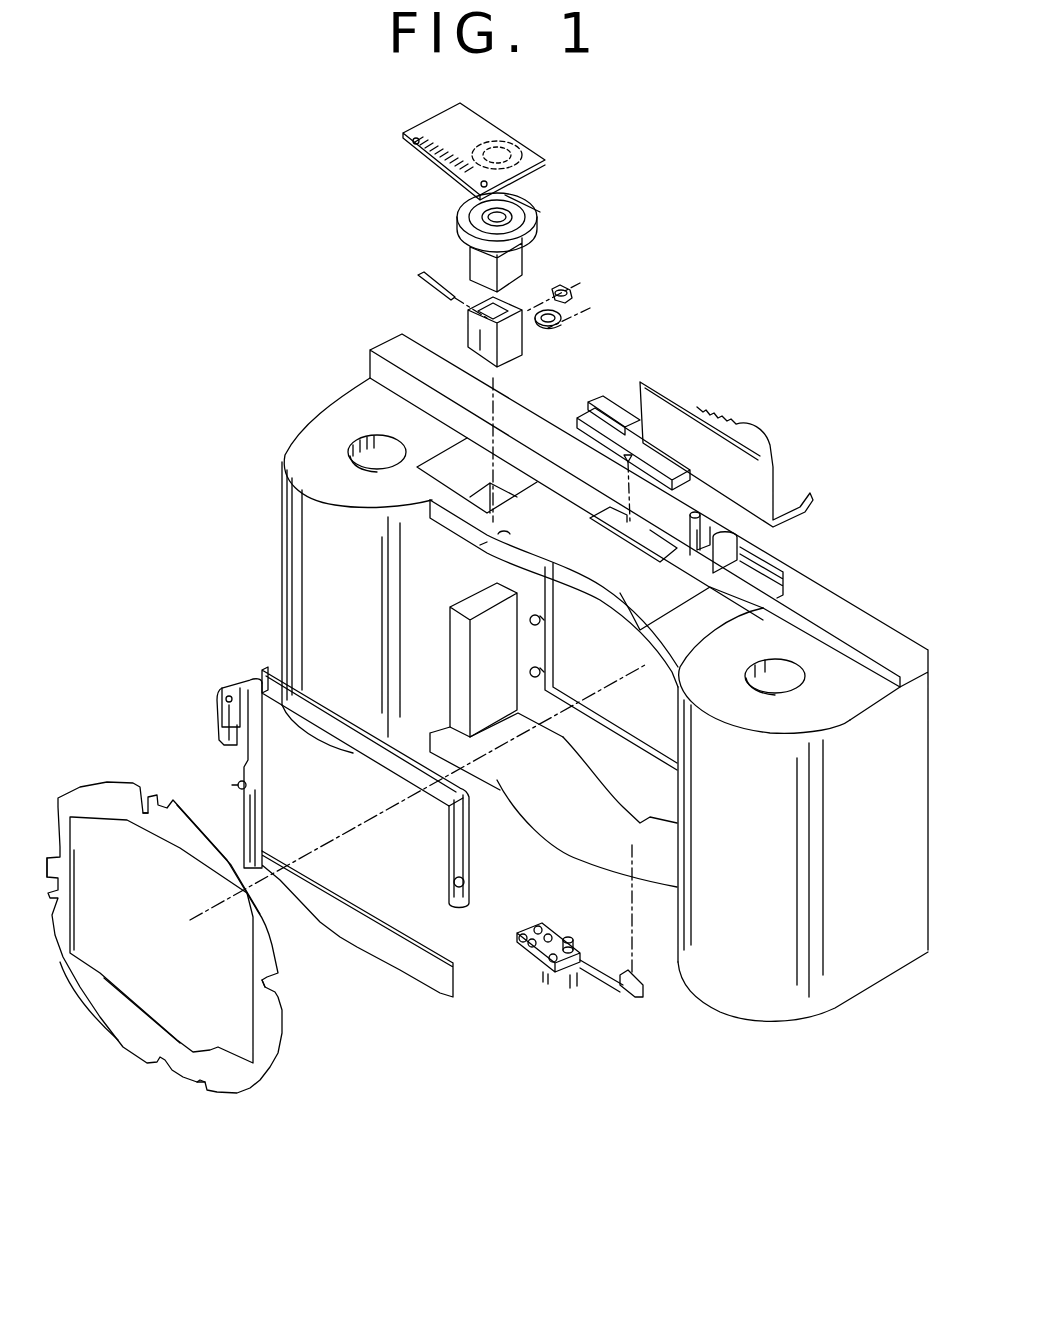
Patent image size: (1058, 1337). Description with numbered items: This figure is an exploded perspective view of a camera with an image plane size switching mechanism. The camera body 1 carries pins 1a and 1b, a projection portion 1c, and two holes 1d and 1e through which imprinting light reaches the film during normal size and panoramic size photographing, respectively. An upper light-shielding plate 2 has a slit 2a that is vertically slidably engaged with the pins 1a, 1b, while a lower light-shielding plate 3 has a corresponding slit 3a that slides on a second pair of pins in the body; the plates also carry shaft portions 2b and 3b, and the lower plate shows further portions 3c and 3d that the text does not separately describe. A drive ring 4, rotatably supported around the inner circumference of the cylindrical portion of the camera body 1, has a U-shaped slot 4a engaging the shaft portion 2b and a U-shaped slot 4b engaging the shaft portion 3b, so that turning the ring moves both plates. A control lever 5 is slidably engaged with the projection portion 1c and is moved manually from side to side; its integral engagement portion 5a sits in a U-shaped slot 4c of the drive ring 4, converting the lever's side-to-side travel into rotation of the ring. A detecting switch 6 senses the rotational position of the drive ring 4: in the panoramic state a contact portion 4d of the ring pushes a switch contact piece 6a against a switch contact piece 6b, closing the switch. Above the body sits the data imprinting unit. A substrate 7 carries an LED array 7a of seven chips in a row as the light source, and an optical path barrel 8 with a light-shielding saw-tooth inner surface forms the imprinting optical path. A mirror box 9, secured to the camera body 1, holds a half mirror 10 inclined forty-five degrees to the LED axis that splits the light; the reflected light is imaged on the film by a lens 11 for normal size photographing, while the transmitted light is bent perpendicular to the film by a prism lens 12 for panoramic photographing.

The camera body 1 is at (348, 395).
The pin 1a is at (545, 670).
The pin 1b is at (545, 622).
The projection portion 1c is at (780, 563).
The hole 1d is at (483, 542).
The hole 1e is at (500, 567).
The upper light-shielding plate 2 is at (262, 675).
The slit 2a is at (462, 808).
The shaft portion 2b is at (453, 880).
The lower light-shielding plate 3 is at (420, 980).
The slit 3a is at (255, 810).
The shaft portion 3b is at (235, 785).
The bent portion 3c is at (223, 737).
The tab portion 3d is at (227, 700).
The drive ring 4 is at (112, 783).
The U-shaped slot 4a is at (283, 972).
The U-shaped slot 4b is at (60, 868).
The U-shaped slot 4c is at (167, 795).
The contact portion 4d is at (183, 1082).
The control lever 5 is at (767, 437).
The engagement portion 5a is at (626, 457).
The detecting switch 6 is at (550, 975).
The switch contact piece 6a is at (640, 973).
The switch contact piece 6b is at (640, 987).
The substrate 7 is at (473, 127).
The LED array 7a is at (508, 163).
The optical path barrel 8 is at (513, 260).
The mirror box 9 is at (480, 363).
The half mirror 10 is at (422, 275).
The lens 11 is at (575, 297).
The prism lens 12 is at (575, 318).